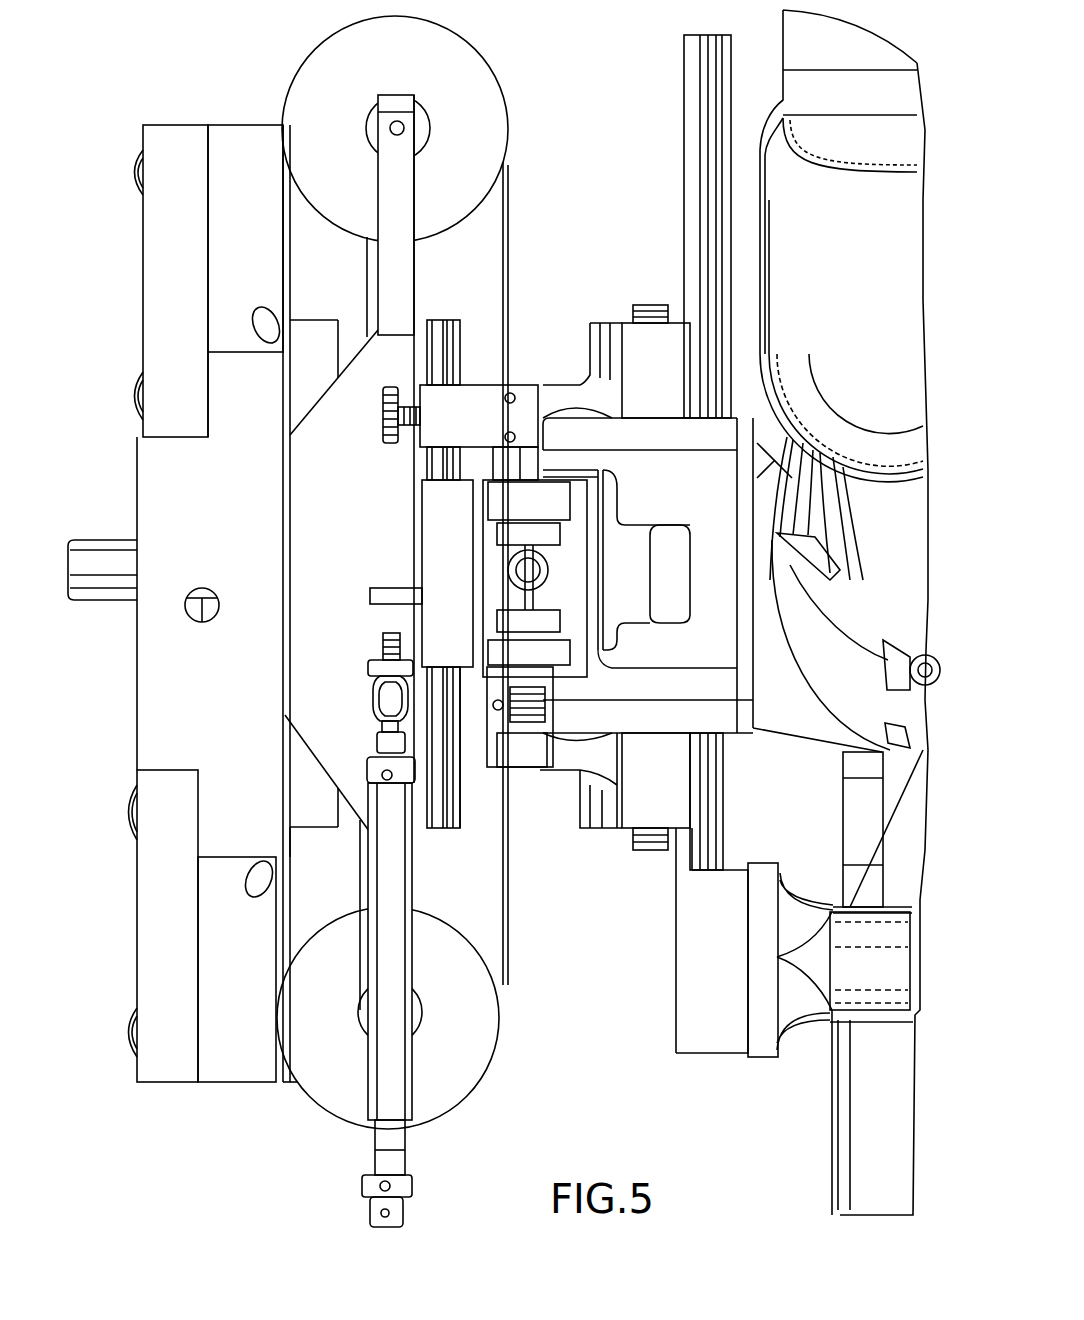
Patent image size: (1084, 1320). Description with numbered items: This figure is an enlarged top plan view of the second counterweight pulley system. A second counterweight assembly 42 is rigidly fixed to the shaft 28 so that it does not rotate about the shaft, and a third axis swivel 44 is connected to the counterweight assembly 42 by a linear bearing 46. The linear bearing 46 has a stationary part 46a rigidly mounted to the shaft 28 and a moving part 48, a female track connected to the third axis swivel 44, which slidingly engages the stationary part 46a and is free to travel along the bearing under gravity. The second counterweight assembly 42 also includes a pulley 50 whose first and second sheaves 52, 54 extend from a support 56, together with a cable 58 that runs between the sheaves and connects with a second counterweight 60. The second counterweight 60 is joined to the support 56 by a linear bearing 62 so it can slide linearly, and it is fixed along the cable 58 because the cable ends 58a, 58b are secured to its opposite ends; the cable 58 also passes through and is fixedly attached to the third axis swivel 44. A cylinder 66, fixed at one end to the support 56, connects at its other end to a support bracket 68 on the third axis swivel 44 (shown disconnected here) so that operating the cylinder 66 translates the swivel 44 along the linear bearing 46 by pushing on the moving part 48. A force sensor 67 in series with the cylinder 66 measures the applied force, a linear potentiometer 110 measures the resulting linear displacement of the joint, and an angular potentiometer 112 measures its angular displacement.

The shaft 28 is at (95, 538).
The second counterweight assembly 42 is at (240, 1130).
The third axis swivel 44 is at (612, 863).
The linear bearing 46 is at (428, 832).
The stationary part 46a is at (458, 808).
The moving part 48 is at (420, 620).
The pulley 50 is at (440, 1145).
The first sheave 52 is at (492, 72).
The second sheave 54 is at (458, 1093).
The support 56 is at (342, 539).
The cable 58 is at (510, 231).
The first end of the cable 58a is at (255, 312).
The second end of the cable 58b is at (258, 902).
The second counterweight 60 is at (137, 745).
The linear bearing 62 is at (302, 830).
The cylinder 66 is at (377, 1130).
The force sensor 67 is at (372, 680).
The support bracket 68 is at (397, 588).
The linear potentiometer 110 is at (383, 415).
The angular potentiometer 112 is at (533, 767).